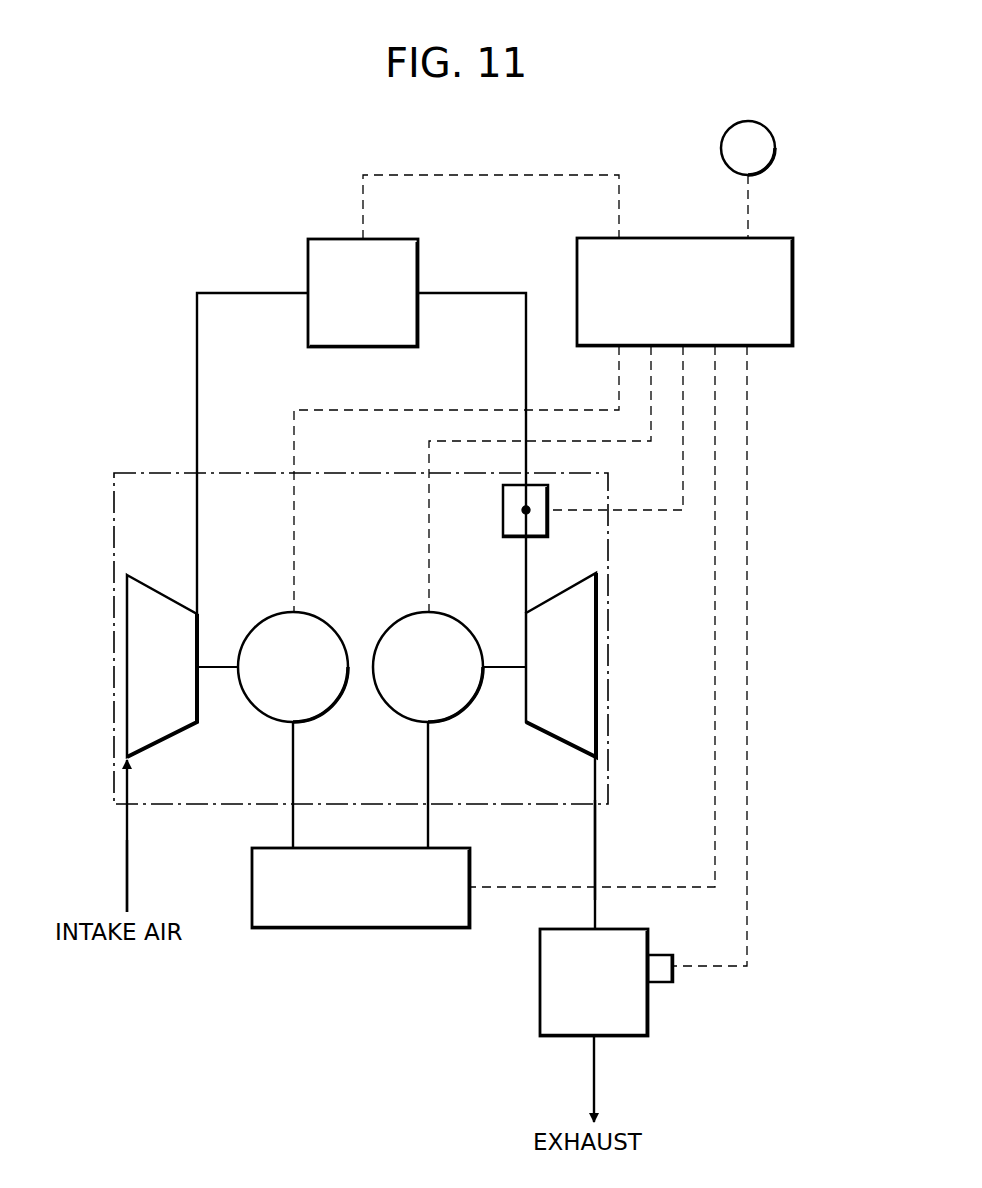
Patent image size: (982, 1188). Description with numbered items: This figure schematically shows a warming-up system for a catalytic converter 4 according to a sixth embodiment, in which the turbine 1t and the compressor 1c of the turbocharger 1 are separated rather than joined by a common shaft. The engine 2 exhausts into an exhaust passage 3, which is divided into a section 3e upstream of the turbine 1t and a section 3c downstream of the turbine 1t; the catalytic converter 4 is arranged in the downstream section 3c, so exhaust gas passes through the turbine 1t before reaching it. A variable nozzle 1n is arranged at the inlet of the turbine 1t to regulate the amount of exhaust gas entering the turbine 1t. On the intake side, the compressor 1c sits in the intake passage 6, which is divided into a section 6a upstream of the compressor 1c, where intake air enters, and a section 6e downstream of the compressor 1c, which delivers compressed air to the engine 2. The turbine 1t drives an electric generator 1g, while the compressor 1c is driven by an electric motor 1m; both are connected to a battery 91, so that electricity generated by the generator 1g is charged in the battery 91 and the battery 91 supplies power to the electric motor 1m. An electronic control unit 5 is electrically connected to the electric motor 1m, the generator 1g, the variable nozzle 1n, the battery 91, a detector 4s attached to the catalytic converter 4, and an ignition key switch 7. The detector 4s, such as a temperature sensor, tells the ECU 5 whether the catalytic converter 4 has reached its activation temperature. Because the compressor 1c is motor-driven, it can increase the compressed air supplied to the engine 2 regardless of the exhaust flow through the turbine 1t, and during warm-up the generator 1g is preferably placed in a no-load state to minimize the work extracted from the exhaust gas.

The turbocharger 1 is at (112, 495).
The compressor 1c is at (156, 588).
The electric motor 1m is at (274, 612).
The electric generator 1g is at (412, 612).
The variable nozzle 1n is at (501, 524).
The turbine 1t is at (576, 586).
The internal combustion engine 2 is at (330, 238).
The exhaust passage 3 is at (601, 832).
The upstream section of exhaust passage 3e is at (524, 377).
The downstream section of exhaust passage 3c is at (592, 848).
The catalytic converter 4 is at (539, 945).
The detector 4s is at (664, 970).
The electronic control unit 5 is at (795, 256).
The intake passage 6 is at (122, 832).
The upstream section of intake passage 6a is at (130, 860).
The downstream section of intake passage 6e is at (195, 388).
The ignition key switch 7 is at (758, 143).
The battery 91 is at (300, 930).